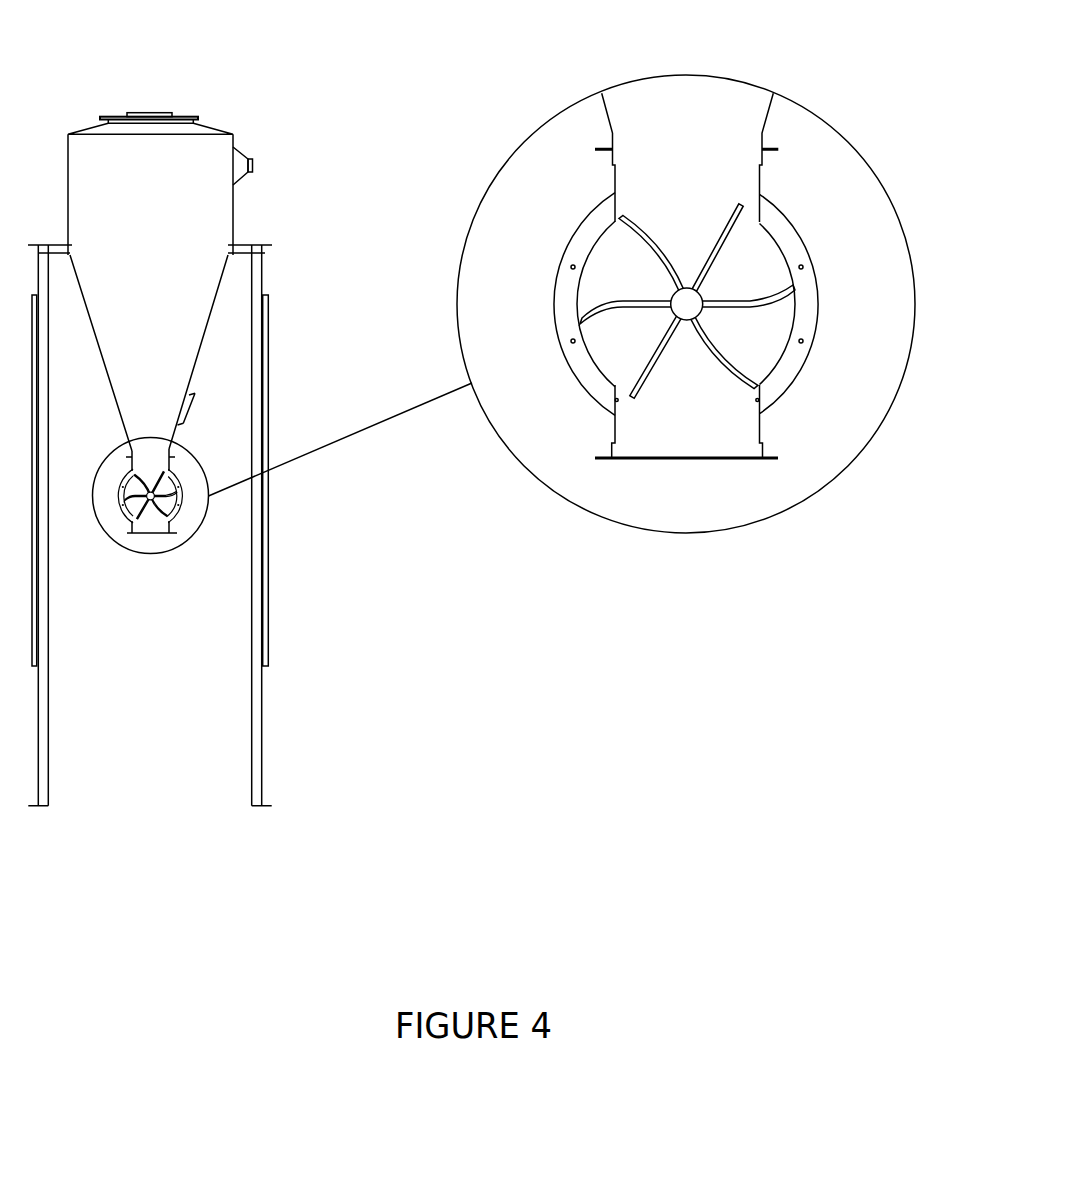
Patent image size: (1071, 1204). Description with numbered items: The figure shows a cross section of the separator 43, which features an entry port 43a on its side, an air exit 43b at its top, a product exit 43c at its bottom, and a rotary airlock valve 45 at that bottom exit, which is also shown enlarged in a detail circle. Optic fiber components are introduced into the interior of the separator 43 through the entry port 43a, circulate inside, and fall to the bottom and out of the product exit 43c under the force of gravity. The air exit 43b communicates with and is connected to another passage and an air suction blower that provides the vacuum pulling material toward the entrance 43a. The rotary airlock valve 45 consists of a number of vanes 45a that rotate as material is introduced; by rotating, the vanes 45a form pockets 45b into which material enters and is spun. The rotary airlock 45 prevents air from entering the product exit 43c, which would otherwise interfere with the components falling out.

The separator 43 is at (206, 126).
The entry port 43a is at (252, 164).
The air exit 43b is at (146, 113).
The product exit 43c is at (147, 552).
The rotary airlock valve 45 is at (740, 530).
The vanes 45a is at (742, 207).
The pockets 45b is at (762, 340).